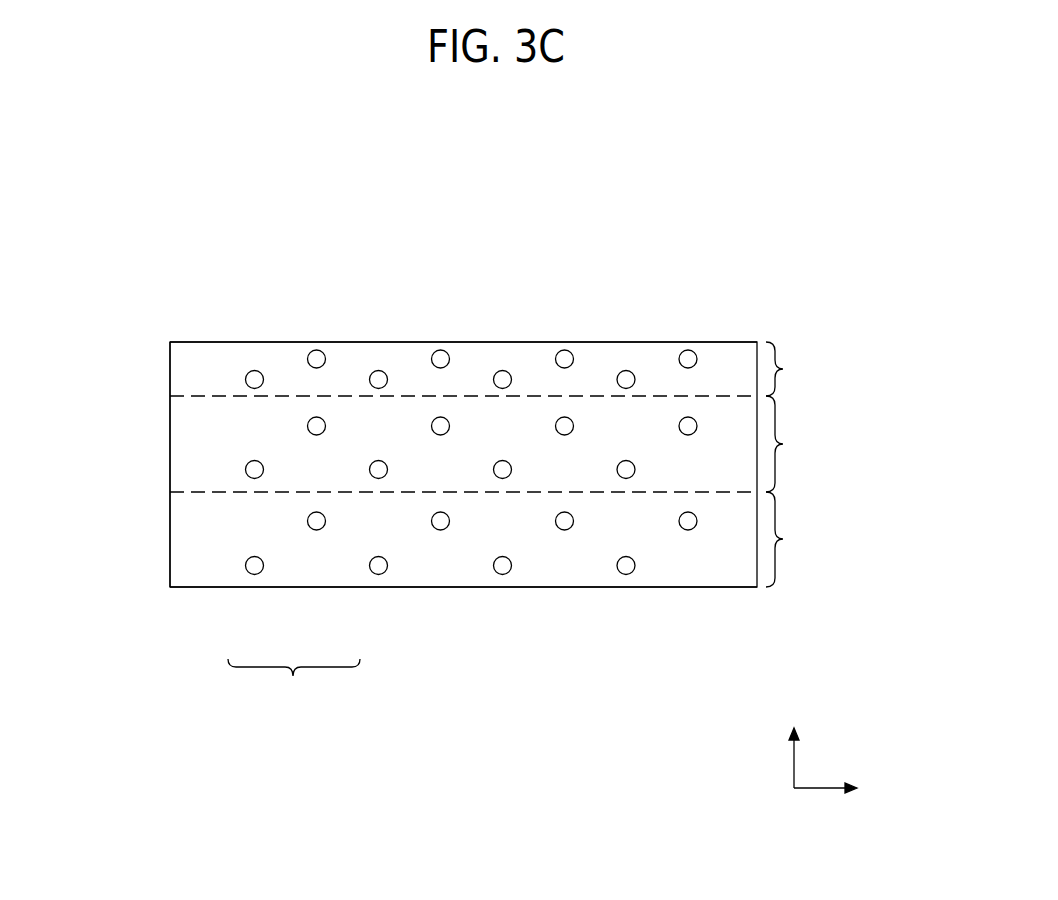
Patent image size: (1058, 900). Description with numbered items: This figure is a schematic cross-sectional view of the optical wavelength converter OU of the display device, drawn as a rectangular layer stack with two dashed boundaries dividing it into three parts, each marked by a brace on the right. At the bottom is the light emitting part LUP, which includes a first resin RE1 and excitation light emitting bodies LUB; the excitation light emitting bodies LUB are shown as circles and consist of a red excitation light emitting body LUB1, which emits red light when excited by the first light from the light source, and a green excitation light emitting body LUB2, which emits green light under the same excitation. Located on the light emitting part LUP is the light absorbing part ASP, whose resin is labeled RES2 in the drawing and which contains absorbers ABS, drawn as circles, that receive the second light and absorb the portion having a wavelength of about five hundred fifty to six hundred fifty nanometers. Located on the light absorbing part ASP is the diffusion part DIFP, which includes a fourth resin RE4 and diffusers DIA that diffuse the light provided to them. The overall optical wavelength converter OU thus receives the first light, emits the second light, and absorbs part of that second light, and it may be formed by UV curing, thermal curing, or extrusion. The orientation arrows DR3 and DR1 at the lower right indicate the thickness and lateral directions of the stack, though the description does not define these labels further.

The optical wavelength converter OU is at (651, 243).
The diffusers DIA is at (440, 350).
The fourth resin RE4 is at (720, 350).
The first resin RE1 is at (723, 567).
The second resin layer RES2 is at (183, 429).
The absorbers ABS is at (254, 470).
The red excitation light emitting body LUB1 is at (254, 574).
The green excitation light emitting body LUB2 is at (316, 530).
The excitation light emitting bodies LUB is at (294, 683).
The diffusion part DIFP is at (801, 369).
The light absorbing part ASP is at (496, 444).
The light emitting part LUP is at (496, 539).
The third direction DR3 is at (794, 744).
The first direction DR1 is at (845, 787).